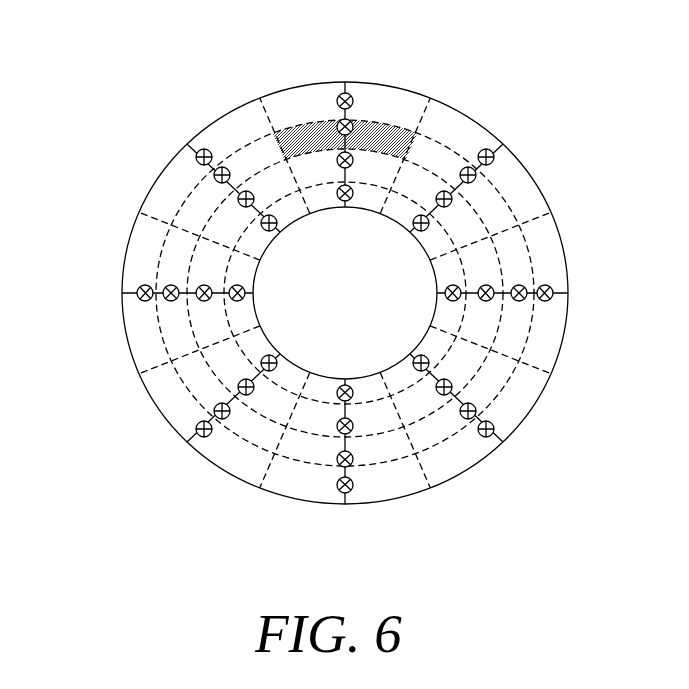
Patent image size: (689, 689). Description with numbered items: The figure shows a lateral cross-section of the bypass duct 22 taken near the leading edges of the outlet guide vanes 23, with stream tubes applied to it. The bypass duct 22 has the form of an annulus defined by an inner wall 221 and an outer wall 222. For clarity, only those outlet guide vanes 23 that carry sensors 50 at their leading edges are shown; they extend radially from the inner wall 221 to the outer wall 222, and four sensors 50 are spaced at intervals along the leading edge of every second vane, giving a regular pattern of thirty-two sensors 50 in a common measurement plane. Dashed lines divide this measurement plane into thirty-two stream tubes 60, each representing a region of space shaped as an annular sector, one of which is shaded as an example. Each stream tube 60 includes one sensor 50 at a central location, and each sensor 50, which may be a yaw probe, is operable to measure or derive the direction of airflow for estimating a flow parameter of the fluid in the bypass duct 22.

The bypass duct 22 is at (252, 137).
The outlet guide vanes 23 is at (218, 166).
The sensors 50 is at (494, 160).
The stream tubes 60 is at (383, 128).
The inner wall 221 is at (265, 251).
The outer wall 222 is at (157, 174).